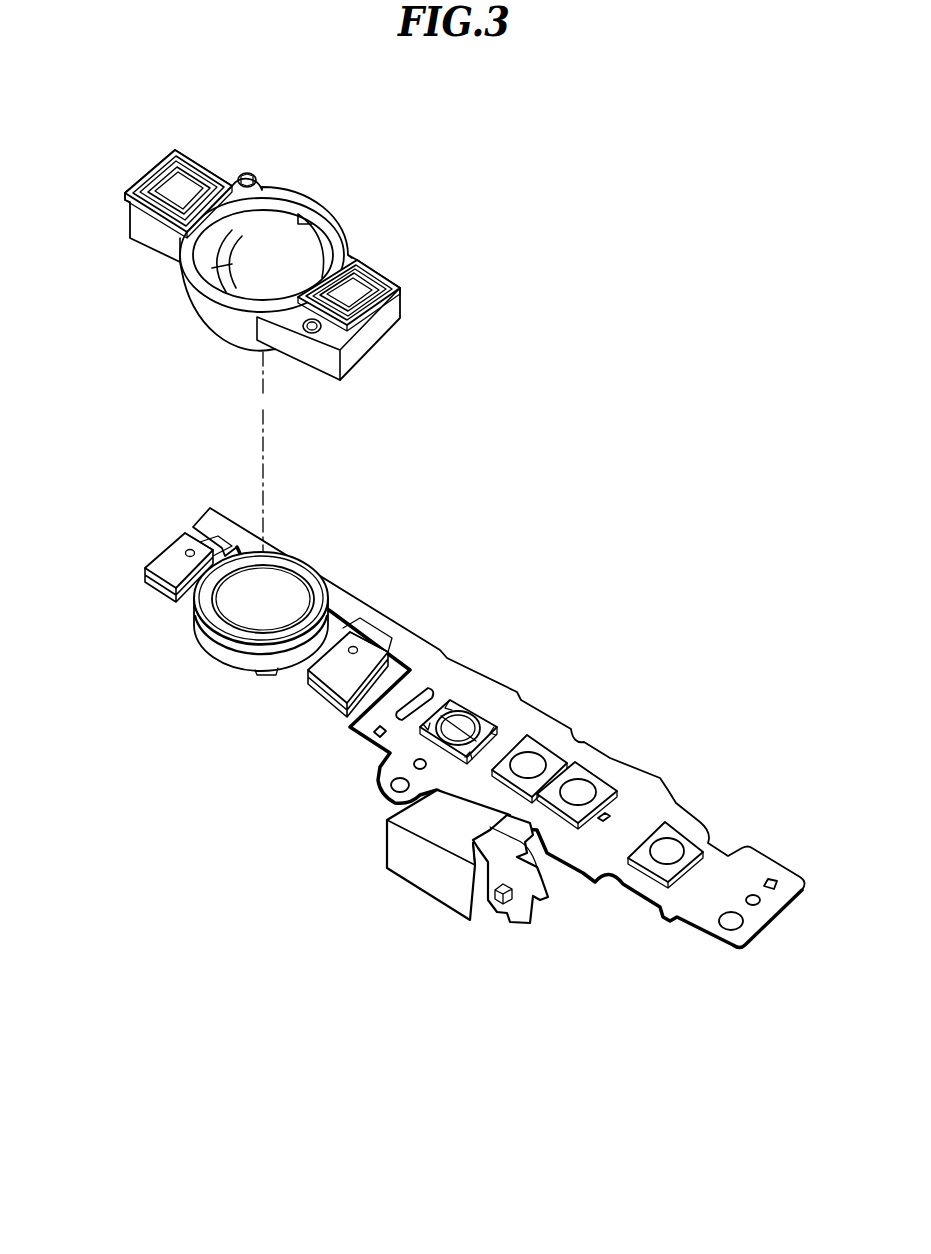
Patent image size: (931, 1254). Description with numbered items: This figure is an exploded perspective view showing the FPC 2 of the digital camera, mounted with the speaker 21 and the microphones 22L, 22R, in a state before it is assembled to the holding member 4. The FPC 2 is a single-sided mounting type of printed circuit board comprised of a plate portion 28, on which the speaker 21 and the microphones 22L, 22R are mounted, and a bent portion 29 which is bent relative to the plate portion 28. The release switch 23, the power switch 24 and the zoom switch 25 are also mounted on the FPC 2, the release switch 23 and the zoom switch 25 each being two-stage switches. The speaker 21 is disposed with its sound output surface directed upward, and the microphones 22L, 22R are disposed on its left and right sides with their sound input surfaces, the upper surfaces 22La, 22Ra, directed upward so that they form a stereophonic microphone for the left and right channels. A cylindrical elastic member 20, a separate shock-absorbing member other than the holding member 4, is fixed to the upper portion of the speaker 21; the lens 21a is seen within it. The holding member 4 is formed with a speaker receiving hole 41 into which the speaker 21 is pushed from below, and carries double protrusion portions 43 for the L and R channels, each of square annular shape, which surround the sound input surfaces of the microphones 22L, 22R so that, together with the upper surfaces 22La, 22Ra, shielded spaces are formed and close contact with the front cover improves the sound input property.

The FPC 2 is at (632, 782).
The holding member 4 is at (202, 344).
The speaker receiving hole 41 is at (310, 218).
The double protrusion portions 43 is at (215, 168).
The elastic member 20 is at (302, 568).
The speaker 21 is at (276, 571).
The lens 21a is at (286, 585).
The microphone 22L is at (154, 597).
The upper surface of the microphone 22L 22La is at (180, 553).
The microphone 22R is at (319, 692).
The upper surface of the microphone 22R 22Ra is at (352, 635).
The release switch 23 is at (670, 850).
The power switch 24 is at (463, 718).
The zoom switch 25 is at (579, 790).
The plate portion 28 is at (592, 866).
The bent portion 29 is at (548, 857).